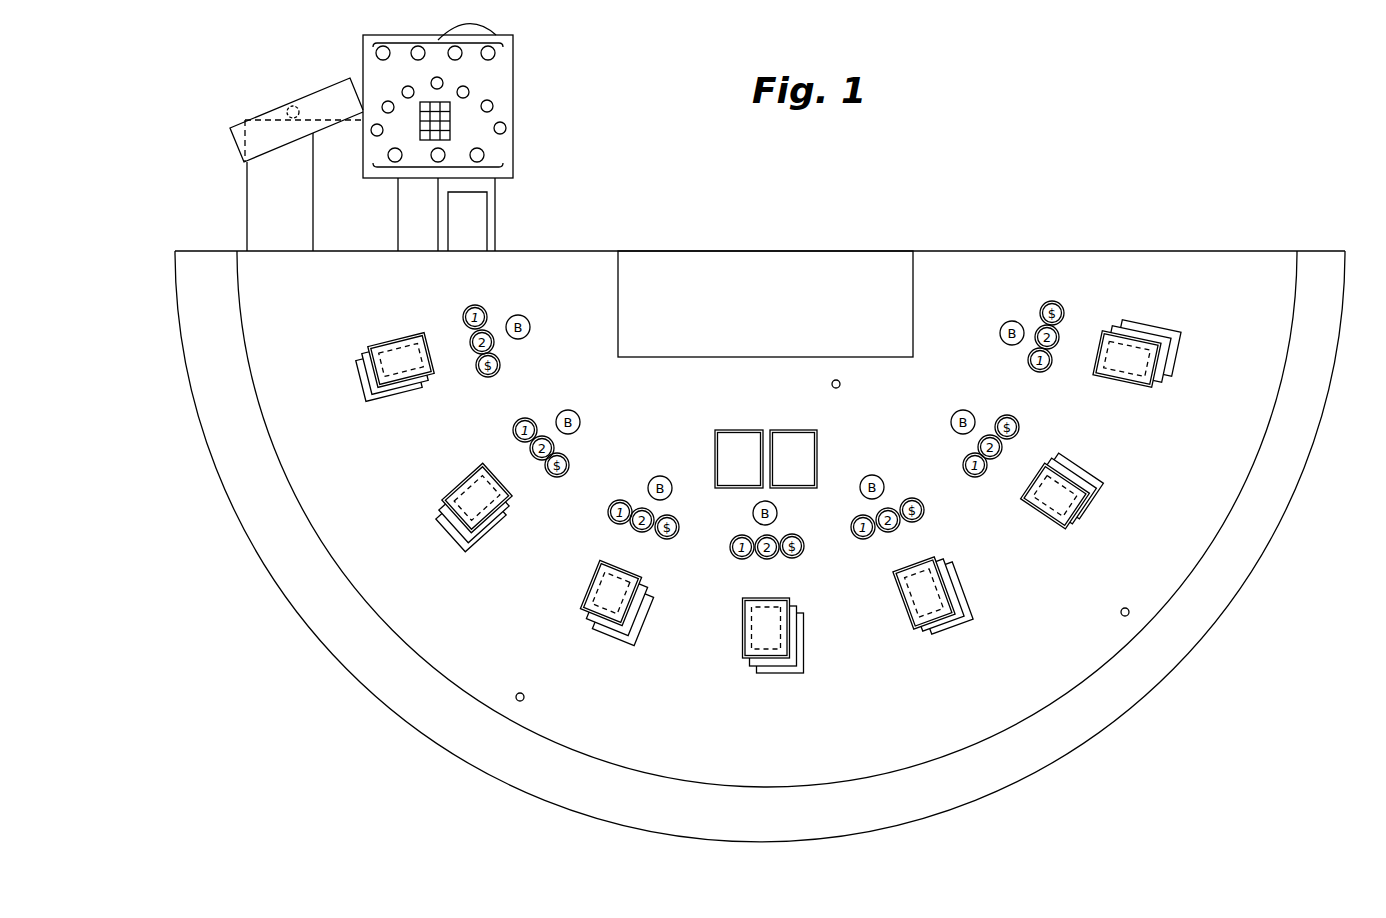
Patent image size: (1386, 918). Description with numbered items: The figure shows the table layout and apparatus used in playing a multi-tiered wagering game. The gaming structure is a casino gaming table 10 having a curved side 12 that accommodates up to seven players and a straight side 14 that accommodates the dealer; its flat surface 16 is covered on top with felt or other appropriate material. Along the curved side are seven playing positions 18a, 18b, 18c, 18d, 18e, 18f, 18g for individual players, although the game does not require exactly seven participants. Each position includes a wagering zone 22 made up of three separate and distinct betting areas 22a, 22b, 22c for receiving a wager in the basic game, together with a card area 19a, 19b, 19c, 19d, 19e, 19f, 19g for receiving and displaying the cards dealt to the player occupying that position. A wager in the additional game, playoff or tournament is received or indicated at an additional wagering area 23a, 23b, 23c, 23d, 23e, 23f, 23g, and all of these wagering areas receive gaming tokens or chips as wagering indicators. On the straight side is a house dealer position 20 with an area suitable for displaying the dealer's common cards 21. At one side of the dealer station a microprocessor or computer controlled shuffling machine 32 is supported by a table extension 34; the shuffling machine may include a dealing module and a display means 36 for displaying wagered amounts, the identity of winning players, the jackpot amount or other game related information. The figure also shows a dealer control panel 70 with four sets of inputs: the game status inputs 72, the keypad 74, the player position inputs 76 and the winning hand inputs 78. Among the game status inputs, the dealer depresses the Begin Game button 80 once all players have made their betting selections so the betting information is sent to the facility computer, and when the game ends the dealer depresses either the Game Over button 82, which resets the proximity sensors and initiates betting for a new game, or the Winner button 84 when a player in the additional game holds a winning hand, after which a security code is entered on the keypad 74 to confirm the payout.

The gaming table 10 is at (590, 248).
The curved side 12 is at (440, 750).
The straight side 14 is at (960, 250).
The flat surface 16 is at (465, 427).
The playing position 18a is at (1191, 386).
The playing position 18b is at (1112, 523).
The playing position 18c is at (955, 642).
The playing position 18d is at (758, 683).
The playing position 18e is at (597, 650).
The playing position 18f is at (436, 540).
The playing position 18g is at (353, 424).
The card area 19a is at (1178, 353).
The card area 19b is at (1082, 468).
The card area 19c is at (962, 572).
The card area 19d is at (795, 625).
The card area 19e is at (578, 593).
The card area 19f is at (463, 489).
The card area 19g is at (372, 347).
The house dealer position 20 is at (795, 290).
The dealer's common cards 21 is at (750, 437).
The wagering zone 22 is at (793, 404).
The betting area 22a is at (472, 306).
The betting area 22b is at (472, 338).
The betting area 22c is at (500, 366).
The additional game wagering area 23a is at (1000, 333).
The additional game wagering area 23b is at (953, 412).
The additional game wagering area 23c is at (877, 475).
The additional game wagering area 23d is at (752, 512).
The additional game wagering area 23e is at (668, 476).
The additional game wagering area 23f is at (575, 412).
The additional game wagering area 23g is at (530, 322).
The shuffling machine 32 is at (322, 197).
The table extension 34 is at (447, 214).
The display means 36 is at (318, 102).
The dealer control panel 70 is at (505, 113).
The game status inputs 72 is at (445, 160).
The keypad 74 is at (452, 127).
The player position inputs 76 is at (378, 95).
The winning hand inputs 78 is at (513, 37).
The Begin Game button 80 is at (374, 153).
The Game Over button 82 is at (433, 172).
The Winner button 84 is at (486, 153).